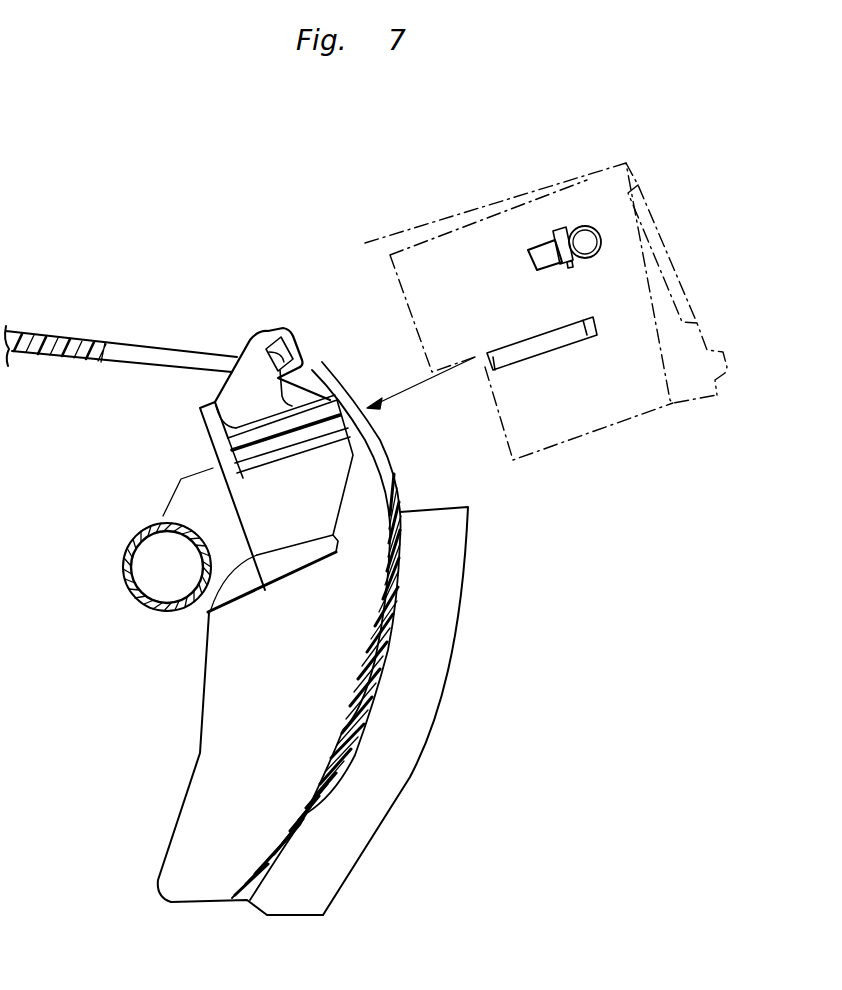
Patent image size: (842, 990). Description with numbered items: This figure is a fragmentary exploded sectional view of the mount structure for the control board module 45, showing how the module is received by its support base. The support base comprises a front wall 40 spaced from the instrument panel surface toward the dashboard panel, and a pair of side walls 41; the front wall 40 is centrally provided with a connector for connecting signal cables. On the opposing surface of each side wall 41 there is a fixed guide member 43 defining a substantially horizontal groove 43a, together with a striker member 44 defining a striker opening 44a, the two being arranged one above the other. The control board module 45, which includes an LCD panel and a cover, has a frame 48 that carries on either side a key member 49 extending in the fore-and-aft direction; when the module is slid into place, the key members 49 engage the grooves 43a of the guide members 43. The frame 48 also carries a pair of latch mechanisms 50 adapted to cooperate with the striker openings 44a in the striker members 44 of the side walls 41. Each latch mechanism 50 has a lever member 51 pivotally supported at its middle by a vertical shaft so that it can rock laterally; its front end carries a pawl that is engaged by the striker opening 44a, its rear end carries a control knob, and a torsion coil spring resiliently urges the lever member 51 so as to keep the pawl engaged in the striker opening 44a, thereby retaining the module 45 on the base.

The front wall 40 is at (207, 613).
The side walls 41 is at (213, 445).
The fixed guide member 43 is at (325, 393).
The groove 43a is at (255, 448).
The striker member 44 is at (250, 345).
The striker opening 44a is at (281, 350).
The control board module 45 is at (594, 152).
The frame 48 is at (595, 437).
The key members 49 is at (522, 365).
The latch mechanisms 50 is at (542, 226).
The lever member 51 is at (535, 250).